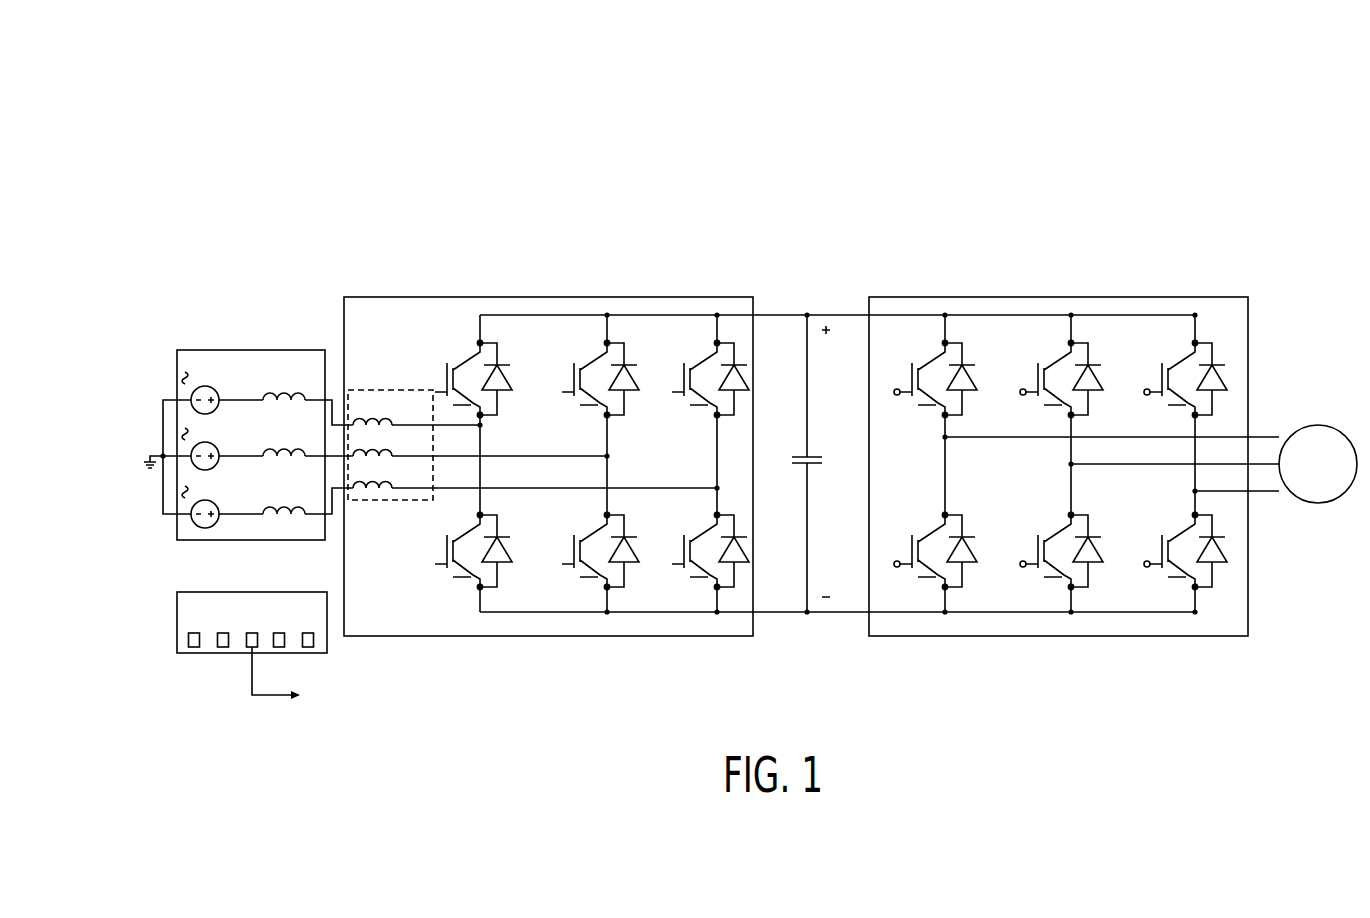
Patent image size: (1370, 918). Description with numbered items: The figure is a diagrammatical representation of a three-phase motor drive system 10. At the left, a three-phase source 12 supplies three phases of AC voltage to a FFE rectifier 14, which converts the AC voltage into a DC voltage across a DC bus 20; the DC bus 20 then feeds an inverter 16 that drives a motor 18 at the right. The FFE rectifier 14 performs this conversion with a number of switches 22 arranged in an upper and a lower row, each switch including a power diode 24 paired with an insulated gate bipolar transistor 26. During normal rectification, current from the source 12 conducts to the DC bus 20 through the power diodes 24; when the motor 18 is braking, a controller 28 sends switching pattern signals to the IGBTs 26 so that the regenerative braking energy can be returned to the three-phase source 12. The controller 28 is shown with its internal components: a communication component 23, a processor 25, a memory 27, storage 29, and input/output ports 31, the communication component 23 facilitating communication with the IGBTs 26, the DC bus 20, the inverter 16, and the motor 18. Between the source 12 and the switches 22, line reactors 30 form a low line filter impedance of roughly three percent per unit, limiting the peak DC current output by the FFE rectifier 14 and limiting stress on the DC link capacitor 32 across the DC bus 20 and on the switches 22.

The three-phase motor drive system 10 is at (1242, 175).
The three-phase source 12 is at (252, 350).
The FFE rectifier 14 is at (549, 297).
The inverter 16 is at (1066, 297).
The motor 18 is at (1312, 504).
The DC bus 20 is at (808, 392).
The switches 22 is at (506, 407).
The communication component 23 is at (193, 648).
The power diodes 24 is at (509, 378).
The processor 25 is at (222, 648).
The insulated gate bipolar transistors (IGBTs) 26 is at (435, 392).
The memory 27 is at (249, 650).
The controller 28 is at (251, 592).
The storage 29 is at (280, 648).
The line reactors 30 is at (392, 390).
The input/output (I/O) ports 31 is at (310, 648).
The DC link capacitor 32 is at (812, 455).